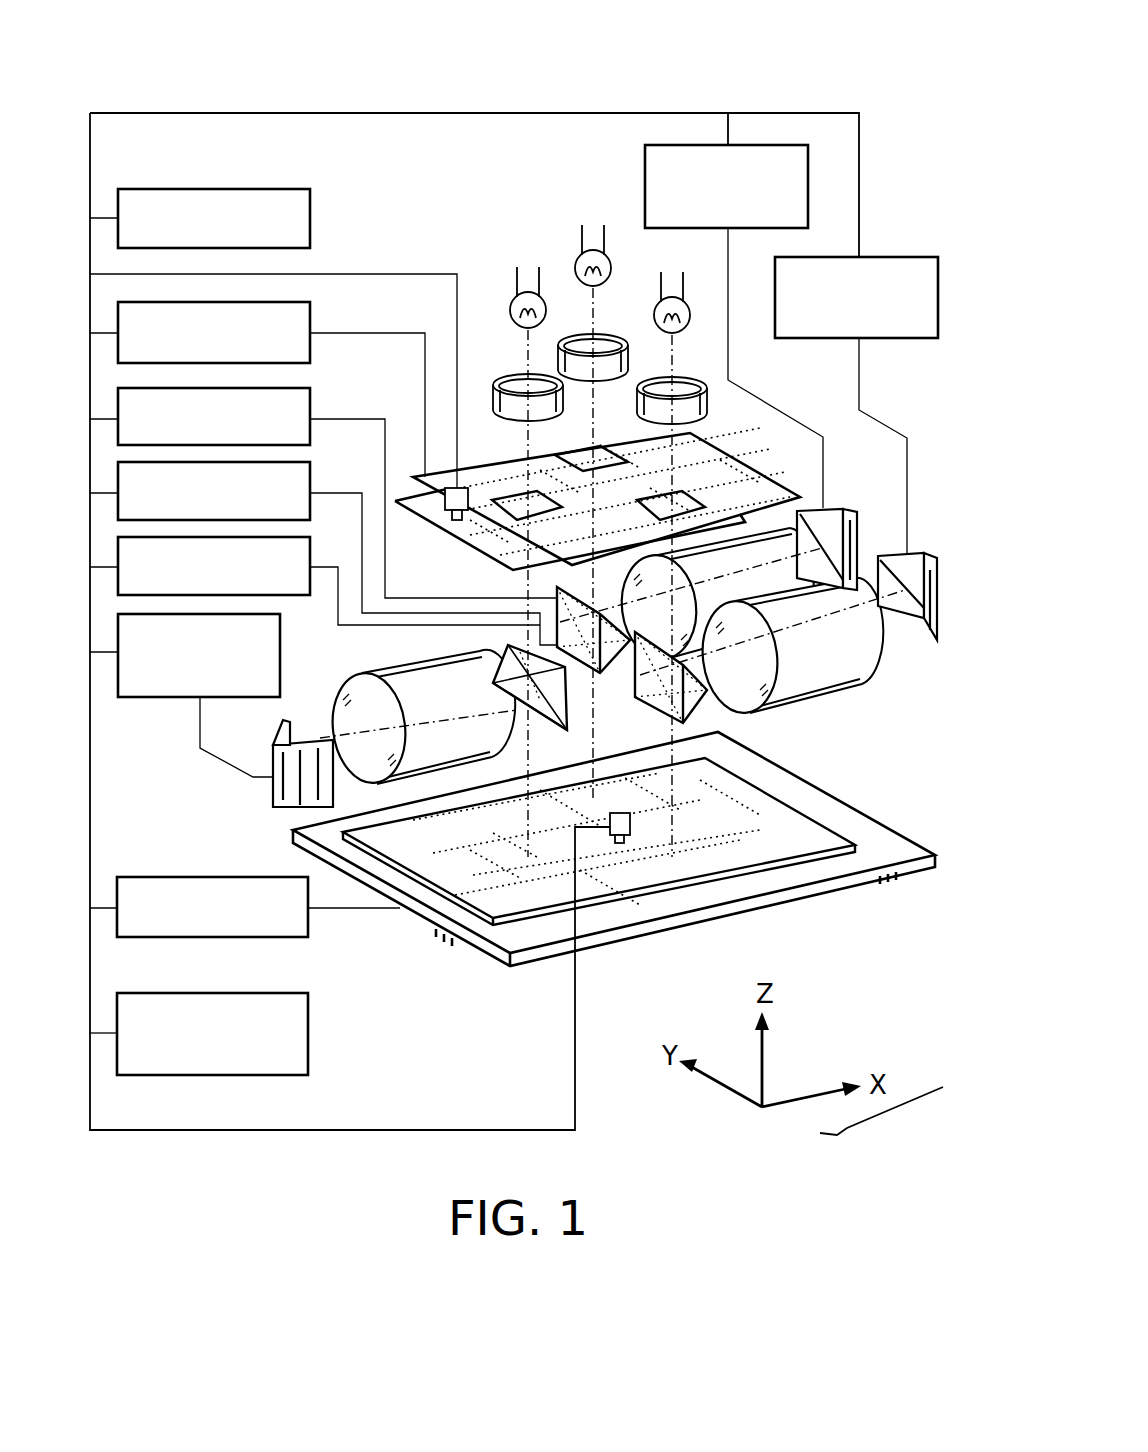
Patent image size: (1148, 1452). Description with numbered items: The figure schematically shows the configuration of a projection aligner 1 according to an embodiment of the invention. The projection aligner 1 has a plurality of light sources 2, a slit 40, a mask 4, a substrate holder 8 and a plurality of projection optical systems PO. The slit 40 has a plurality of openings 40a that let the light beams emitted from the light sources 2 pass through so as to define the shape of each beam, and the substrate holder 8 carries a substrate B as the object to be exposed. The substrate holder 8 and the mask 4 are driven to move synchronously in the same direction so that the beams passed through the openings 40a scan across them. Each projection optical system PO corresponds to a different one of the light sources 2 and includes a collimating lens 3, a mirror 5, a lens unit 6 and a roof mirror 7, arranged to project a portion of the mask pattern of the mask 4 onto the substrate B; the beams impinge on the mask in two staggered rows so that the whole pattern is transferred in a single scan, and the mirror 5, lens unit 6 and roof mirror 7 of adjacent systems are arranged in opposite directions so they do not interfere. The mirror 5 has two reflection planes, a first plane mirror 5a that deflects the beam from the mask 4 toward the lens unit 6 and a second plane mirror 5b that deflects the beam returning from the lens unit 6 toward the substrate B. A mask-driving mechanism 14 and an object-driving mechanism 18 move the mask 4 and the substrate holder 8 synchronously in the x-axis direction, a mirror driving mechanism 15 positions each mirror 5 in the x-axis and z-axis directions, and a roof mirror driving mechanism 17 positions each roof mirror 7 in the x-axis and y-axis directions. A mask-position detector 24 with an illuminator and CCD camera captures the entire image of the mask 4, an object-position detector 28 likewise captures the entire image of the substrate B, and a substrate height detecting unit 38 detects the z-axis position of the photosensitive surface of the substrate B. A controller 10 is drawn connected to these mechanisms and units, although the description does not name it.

The projection aligner 1 is at (662, 90).
The light source 2 is at (514, 298).
The collimating lens 3 is at (524, 374).
The mask 4 is at (746, 479).
The mirror 5 is at (569, 660).
The first plane mirror 5a is at (500, 667).
The second plane mirror 5b is at (612, 660).
The lens unit 6 is at (378, 678).
The roof mirror 7 is at (857, 527).
The substrate holder 8 is at (780, 878).
The controller 10 is at (311, 226).
The mask-driving mechanism 14 is at (311, 318).
The mirror driving mechanism 15 is at (311, 397).
The roof mirror driving mechanism 17 is at (160, 697).
The object-driving mechanism 18 is at (205, 937).
The mask-position detector 24 is at (443, 508).
The object-position detector 28 is at (614, 807).
The substrate height detecting unit 38 is at (205, 1075).
The slit 40 is at (508, 477).
The opening 40a is at (625, 452).
The substrate B is at (604, 888).
The projection optical system PO is at (315, 675).